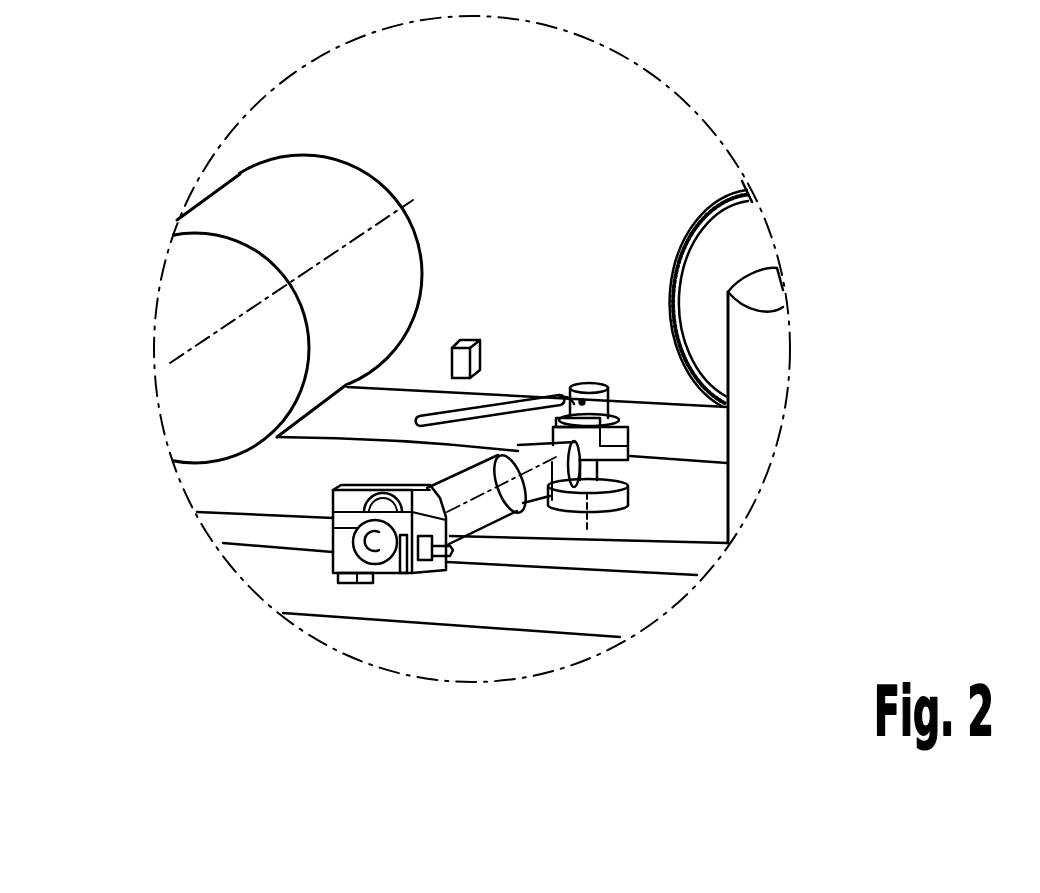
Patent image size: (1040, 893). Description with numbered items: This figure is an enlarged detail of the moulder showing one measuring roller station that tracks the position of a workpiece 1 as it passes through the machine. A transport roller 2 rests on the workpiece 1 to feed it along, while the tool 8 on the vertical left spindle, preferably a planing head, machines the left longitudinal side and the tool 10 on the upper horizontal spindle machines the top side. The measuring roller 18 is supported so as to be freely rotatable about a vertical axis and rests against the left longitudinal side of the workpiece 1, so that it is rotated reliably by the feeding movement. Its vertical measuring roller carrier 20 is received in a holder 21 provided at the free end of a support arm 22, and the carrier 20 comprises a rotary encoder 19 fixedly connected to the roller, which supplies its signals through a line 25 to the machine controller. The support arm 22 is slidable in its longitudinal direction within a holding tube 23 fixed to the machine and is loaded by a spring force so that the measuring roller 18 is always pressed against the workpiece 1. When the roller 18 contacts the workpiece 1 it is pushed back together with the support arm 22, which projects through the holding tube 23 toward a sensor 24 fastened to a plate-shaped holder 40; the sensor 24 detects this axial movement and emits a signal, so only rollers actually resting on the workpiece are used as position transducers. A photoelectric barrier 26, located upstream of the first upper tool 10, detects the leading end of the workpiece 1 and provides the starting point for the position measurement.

The workpiece 1 is at (677, 433).
The transport roller 2 is at (735, 255).
The tool 8 is at (761, 363).
The tool 10 is at (285, 230).
The measuring roller 18 is at (612, 507).
The rotary encoder 19 is at (577, 387).
The measuring roller carrier 20 is at (610, 475).
The holder 21 is at (630, 445).
The support arm 22 is at (328, 540).
The holding tube 23 is at (483, 515).
The sensor 24 is at (421, 577).
The line 25 is at (490, 422).
The photoelectric barrier 26 is at (462, 340).
The plate-shaped holder 40 is at (332, 513).